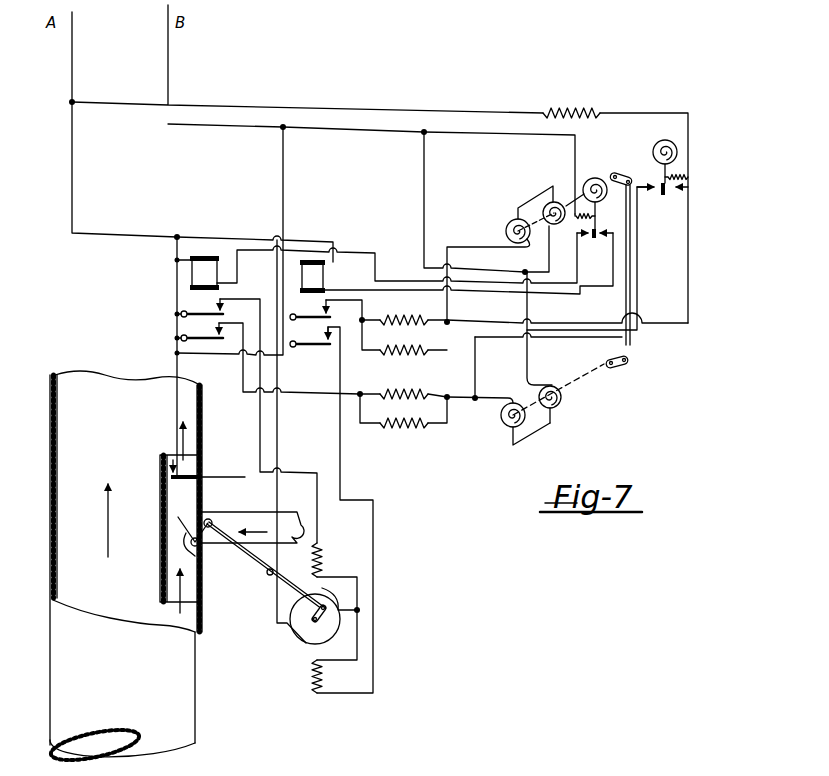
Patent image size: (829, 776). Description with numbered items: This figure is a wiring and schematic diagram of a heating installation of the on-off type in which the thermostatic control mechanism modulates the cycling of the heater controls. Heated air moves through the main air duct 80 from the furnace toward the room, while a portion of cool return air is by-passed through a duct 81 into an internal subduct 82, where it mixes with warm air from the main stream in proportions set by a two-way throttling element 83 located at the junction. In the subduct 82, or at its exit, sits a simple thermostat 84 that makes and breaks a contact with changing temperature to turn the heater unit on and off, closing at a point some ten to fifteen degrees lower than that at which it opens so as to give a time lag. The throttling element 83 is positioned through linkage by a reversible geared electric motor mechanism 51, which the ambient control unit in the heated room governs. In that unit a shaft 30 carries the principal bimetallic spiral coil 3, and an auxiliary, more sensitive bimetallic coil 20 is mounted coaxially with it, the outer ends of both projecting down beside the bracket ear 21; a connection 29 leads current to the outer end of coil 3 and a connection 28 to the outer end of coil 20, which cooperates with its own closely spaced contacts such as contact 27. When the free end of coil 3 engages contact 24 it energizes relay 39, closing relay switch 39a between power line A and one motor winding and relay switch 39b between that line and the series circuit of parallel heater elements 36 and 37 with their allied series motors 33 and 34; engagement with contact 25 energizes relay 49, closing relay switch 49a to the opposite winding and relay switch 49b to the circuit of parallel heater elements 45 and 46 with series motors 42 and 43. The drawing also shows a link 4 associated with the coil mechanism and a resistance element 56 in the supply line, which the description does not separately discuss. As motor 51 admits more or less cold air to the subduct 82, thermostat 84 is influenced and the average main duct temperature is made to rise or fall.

The principal bimetallic thermal sensitive spiral coil 3 is at (600, 180).
The link 4 is at (602, 372).
The auxiliary bimetallic thermal sensitive spiral coil 20 is at (678, 144).
The ear of the bracket 21 is at (655, 194).
The switch contact 24 is at (582, 237).
The switch contact 25 is at (602, 242).
The contact 27 is at (678, 196).
The connection 28 is at (691, 178).
The connection 29 is at (596, 218).
The shaft 30 is at (567, 200).
The series motor 33 is at (509, 232).
The series motor 34 is at (548, 197).
The heater element 36 is at (408, 318).
The heater element 37 is at (408, 354).
The relay 39 is at (325, 277).
The relay switch 39a is at (310, 335).
The relay switch 39b is at (306, 309).
The series motor 42 is at (506, 428).
The series motor 43 is at (562, 403).
The heater element 45 is at (394, 390).
The heater element 46 is at (400, 429).
The relay 49 is at (192, 270).
The relay switch 49a is at (183, 310).
The relay switch 49b is at (183, 338).
The geared electric motor mechanism 51 is at (343, 627).
The resistor 56 is at (580, 111).
The air duct 80 is at (187, 698).
The duct 81 is at (295, 507).
The internal subduct 82 is at (172, 505).
The two-way throttling element 83 is at (184, 525).
The thermostat 84 is at (175, 480).